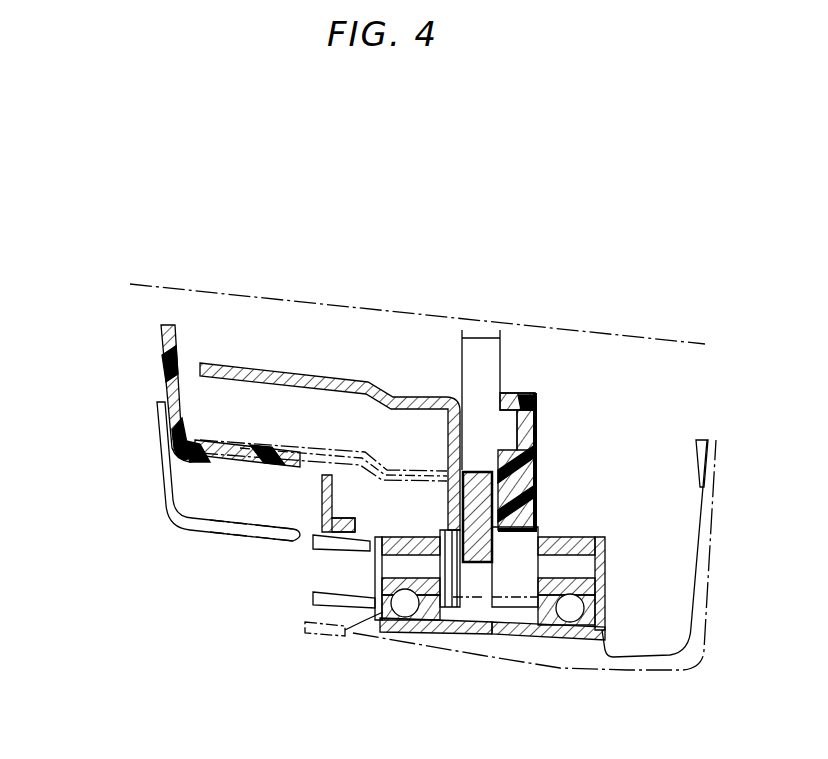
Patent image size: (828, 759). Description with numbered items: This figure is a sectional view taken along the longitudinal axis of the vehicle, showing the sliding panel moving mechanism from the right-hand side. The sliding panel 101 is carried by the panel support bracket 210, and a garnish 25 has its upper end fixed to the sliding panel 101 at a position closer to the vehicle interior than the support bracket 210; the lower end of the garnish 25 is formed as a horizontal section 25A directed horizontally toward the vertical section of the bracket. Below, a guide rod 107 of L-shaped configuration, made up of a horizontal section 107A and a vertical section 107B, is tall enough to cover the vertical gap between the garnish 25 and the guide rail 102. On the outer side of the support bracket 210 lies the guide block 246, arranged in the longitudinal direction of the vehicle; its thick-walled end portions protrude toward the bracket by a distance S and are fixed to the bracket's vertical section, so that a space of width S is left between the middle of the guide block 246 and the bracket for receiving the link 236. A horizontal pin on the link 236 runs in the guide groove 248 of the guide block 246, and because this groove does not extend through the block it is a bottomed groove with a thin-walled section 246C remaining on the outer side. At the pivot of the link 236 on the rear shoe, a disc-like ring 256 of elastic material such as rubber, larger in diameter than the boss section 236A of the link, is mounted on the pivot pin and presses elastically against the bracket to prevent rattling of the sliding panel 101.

The sliding panel 101 is at (623, 335).
The guide rail 102 is at (355, 634).
The garnish 25 is at (163, 376).
The horizontal section 25A is at (200, 458).
The guide rod 107 is at (313, 538).
The horizontal section 107A is at (364, 506).
The vertical section 107B is at (322, 486).
The panel support bracket 210 is at (308, 370).
The distance S is at (482, 342).
The link 236 is at (500, 548).
The boss section 236A is at (473, 598).
The guide block 246 is at (517, 392).
The thin-walled section 246C is at (537, 428).
The guide groove 248 is at (532, 424).
The disc-like ring 256 is at (530, 598).